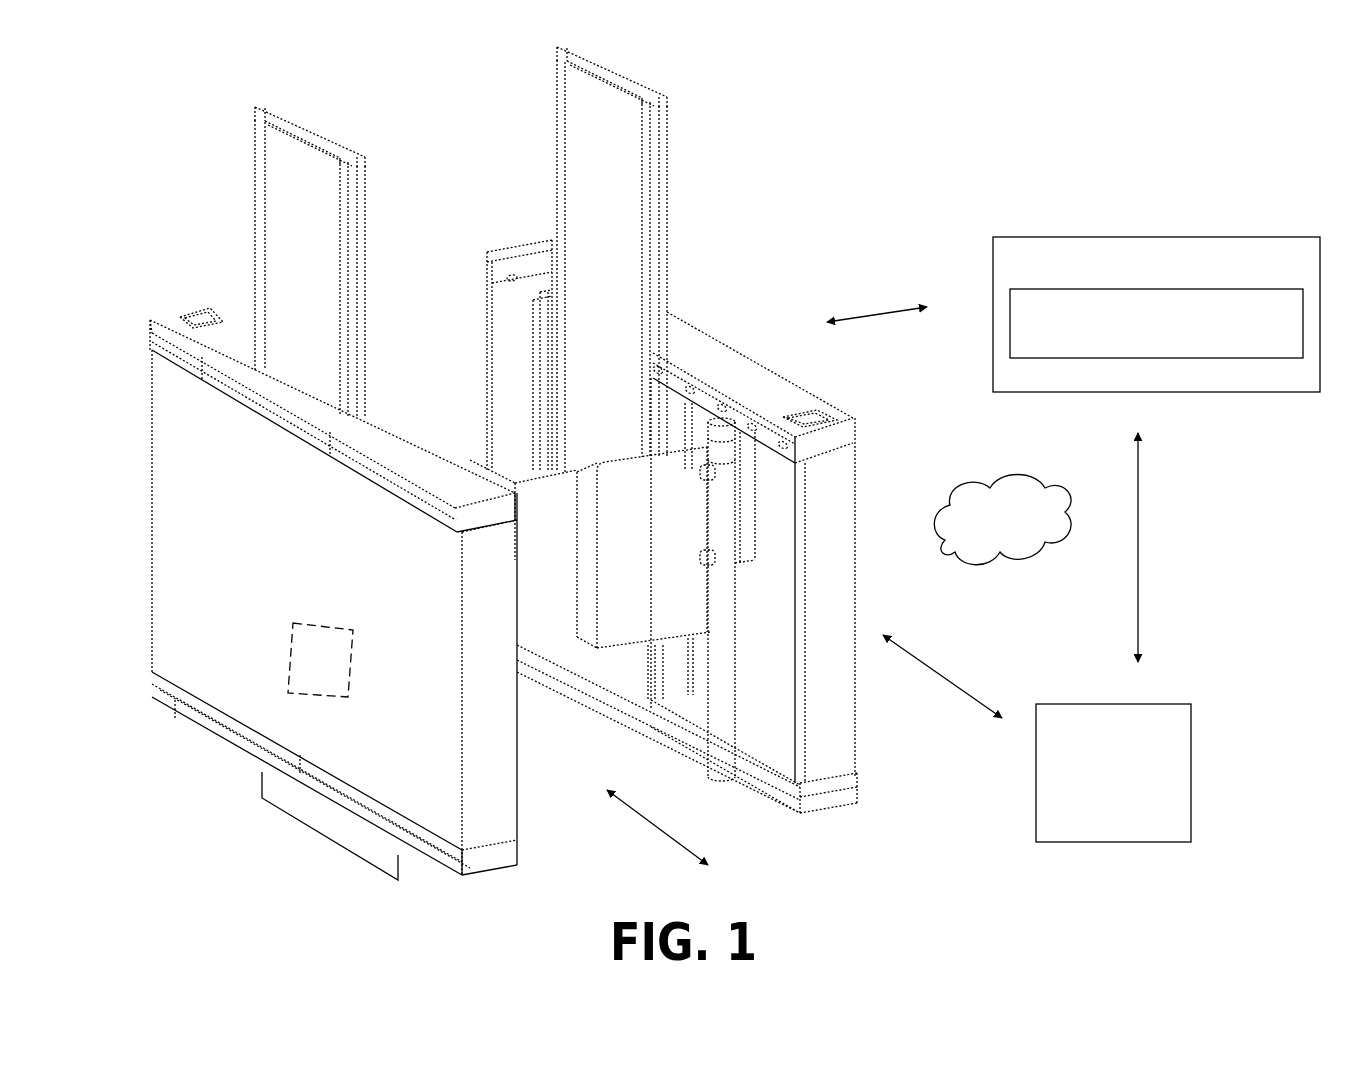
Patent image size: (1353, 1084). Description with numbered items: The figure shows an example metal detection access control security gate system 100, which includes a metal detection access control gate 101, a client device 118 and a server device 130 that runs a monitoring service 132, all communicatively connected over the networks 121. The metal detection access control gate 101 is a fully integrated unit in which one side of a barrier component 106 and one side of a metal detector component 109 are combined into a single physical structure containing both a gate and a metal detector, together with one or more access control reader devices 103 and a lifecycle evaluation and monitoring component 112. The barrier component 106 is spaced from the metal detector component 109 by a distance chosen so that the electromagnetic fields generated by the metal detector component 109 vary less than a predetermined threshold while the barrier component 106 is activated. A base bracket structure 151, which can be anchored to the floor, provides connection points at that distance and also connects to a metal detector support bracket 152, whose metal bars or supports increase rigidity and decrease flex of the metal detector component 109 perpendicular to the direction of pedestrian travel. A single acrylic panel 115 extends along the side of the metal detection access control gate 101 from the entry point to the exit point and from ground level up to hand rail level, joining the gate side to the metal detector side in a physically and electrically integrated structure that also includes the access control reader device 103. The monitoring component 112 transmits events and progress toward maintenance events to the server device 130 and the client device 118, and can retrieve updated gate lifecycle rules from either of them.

The metal detection access control security gate system 100 is at (700, 475).
The metal detection access control gate 101 is at (489, 463).
The access control reader device 103 is at (180, 319).
The barrier component 106 is at (653, 628).
The metal detector component 109 is at (577, 147).
The lifecycle evaluation and monitoring component 112 is at (320, 660).
The acrylic panel 115 is at (489, 587).
The client device 118 is at (1113, 773).
The networks 121 is at (1002, 520).
The server device 130 is at (1156, 314).
The monitoring service 132 is at (1156, 323).
The base bracket structure 151 is at (154, 702).
The metal detector support bracket 152 is at (555, 395).